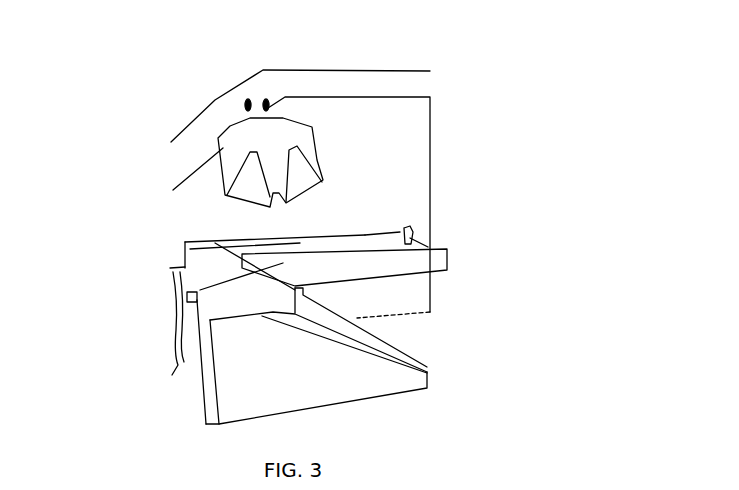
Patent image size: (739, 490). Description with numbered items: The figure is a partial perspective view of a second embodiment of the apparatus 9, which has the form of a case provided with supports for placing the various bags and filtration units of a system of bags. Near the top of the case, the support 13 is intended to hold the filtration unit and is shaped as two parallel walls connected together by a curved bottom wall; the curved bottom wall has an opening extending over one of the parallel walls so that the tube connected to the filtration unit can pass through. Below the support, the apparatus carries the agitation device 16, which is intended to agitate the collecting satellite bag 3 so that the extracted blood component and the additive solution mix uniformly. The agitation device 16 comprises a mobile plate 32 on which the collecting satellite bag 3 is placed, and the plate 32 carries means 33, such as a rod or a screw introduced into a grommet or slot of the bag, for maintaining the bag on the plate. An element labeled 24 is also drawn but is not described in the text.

The collecting satellite bag 3 is at (283, 259).
The apparatus 9 is at (415, 137).
The support 13 is at (275, 127).
The agitation device 16 is at (228, 365).
The guide rail 24 is at (188, 248).
The mobile plate 32 is at (390, 262).
The means for maintaining the bag on the plate 33 is at (415, 227).